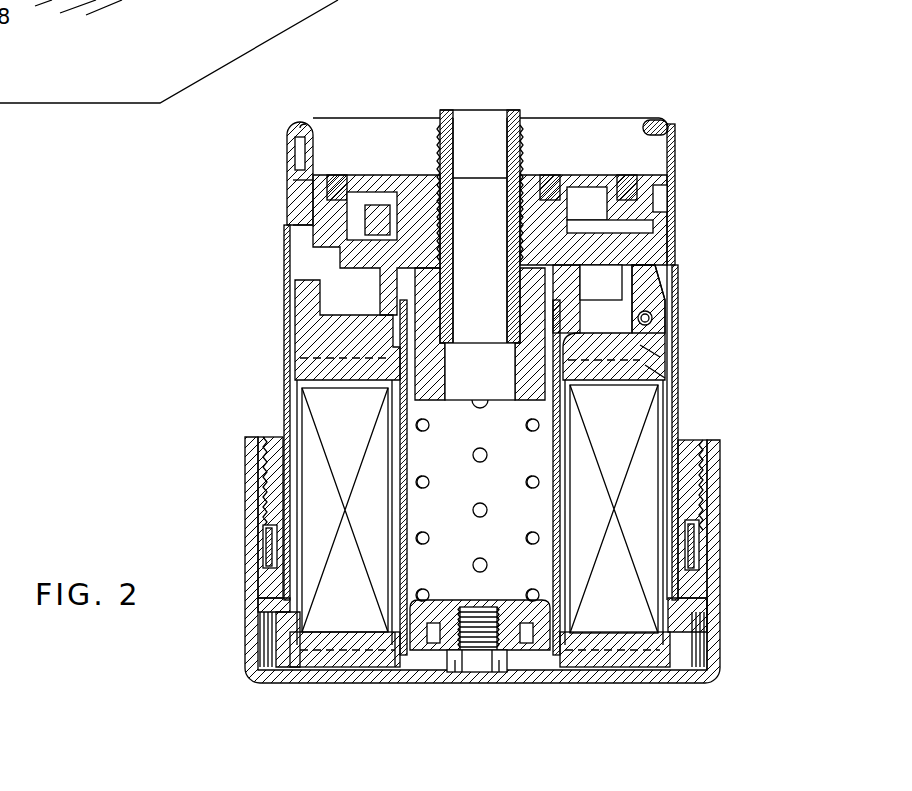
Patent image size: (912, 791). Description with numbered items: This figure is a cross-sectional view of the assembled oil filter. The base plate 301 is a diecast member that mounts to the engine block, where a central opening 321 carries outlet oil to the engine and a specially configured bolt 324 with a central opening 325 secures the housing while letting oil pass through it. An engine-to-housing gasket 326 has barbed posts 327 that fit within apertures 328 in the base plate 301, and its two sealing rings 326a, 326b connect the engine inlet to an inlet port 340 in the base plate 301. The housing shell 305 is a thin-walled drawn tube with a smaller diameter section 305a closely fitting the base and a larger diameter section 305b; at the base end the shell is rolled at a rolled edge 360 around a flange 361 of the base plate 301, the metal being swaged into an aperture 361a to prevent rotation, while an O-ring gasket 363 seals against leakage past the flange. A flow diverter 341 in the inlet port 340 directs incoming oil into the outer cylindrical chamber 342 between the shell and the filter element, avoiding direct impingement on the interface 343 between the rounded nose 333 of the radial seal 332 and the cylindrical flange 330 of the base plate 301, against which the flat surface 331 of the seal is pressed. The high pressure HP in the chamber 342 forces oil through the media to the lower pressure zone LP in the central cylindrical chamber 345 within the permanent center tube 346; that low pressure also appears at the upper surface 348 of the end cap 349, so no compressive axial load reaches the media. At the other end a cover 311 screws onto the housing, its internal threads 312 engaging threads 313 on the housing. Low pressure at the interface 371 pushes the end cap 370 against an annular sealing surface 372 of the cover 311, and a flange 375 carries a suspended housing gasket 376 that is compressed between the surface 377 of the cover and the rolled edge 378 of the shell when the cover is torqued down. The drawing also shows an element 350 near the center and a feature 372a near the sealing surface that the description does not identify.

The base plate 301 is at (662, 183).
The shell 305 is at (284, 390).
The smaller diameter section 305a is at (290, 227).
The larger diameter section 305b is at (284, 333).
The cover 311 is at (715, 593).
The internal threads 312 is at (266, 447).
The threads 313 is at (252, 497).
The central opening 321 is at (492, 118).
The bolt 324 is at (467, 122).
The central opening 325 is at (467, 343).
The gasket 326 is at (380, 175).
The sealing ring 326a is at (560, 176).
The sealing ring 326b is at (662, 126).
The barbed posts 327 is at (372, 222).
The apertures 328 is at (400, 190).
The cylindrical flange 330 is at (640, 250).
The flat surface 331 is at (660, 357).
The radial seal 332 is at (657, 310).
The rounded nose 333 is at (645, 300).
The inlet port 340 is at (583, 187).
The flow diverter 341 is at (657, 230).
The chamber 342 is at (667, 426).
The interface 343 is at (668, 265).
The central cylindrical chamber 345 is at (494, 595).
The permanent center tube 346 is at (540, 597).
The upper surface 348 is at (575, 343).
The end cap 349 is at (655, 375).
The piston 350 is at (437, 290).
The rolled edge 360 is at (287, 148).
The flange 361 is at (305, 122).
The aperture 361a is at (322, 132).
The O-ring gasket 363 is at (290, 180).
The end cap 370 is at (330, 680).
The interface 371 is at (600, 673).
The annular sealing surface 372 is at (333, 675).
The ring flange 372a is at (397, 670).
The flange 375 is at (275, 632).
The housing gasket 376 is at (700, 572).
The surface 377 is at (272, 618).
The rolled edge 378 is at (252, 532).
The high pressure HP is at (667, 495).
The low pressure zone LP is at (463, 533).